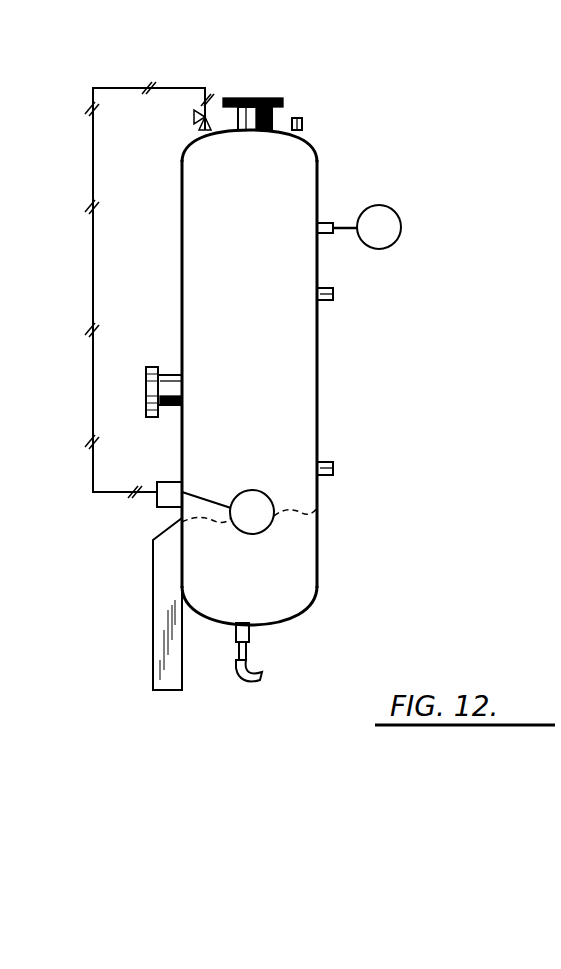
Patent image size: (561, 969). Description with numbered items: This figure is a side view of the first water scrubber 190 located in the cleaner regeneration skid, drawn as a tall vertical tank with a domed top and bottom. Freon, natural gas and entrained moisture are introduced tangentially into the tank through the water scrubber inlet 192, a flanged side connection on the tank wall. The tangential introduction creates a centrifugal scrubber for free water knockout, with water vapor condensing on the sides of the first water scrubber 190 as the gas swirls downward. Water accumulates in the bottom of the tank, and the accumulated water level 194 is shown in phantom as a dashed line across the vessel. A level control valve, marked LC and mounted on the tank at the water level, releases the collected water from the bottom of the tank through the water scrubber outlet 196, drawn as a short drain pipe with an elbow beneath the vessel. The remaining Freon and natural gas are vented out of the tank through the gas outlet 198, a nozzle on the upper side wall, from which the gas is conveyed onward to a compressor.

The first water scrubber 190 is at (318, 153).
The water scrubber inlet 192 is at (146, 385).
The water level 194 is at (317, 508).
The water scrubber outlet 196 is at (248, 648).
The gas outlet 198 is at (333, 292).